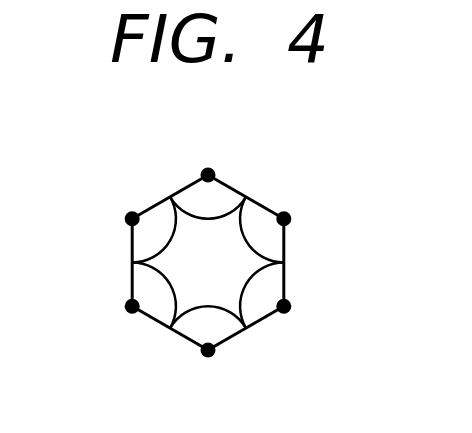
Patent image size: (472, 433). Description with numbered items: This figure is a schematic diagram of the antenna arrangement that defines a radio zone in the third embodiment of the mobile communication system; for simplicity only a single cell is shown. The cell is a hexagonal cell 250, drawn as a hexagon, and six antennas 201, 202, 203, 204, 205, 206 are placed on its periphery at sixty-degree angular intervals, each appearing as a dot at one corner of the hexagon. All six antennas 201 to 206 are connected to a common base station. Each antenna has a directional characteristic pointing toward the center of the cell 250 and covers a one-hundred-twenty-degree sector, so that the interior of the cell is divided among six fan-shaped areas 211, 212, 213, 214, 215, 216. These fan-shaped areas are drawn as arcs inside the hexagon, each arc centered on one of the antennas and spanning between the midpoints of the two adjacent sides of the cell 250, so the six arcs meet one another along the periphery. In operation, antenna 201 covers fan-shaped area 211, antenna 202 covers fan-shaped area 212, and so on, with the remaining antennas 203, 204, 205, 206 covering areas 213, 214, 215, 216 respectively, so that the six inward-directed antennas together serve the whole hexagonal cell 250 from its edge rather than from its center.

The antenna 201 is at (209, 360).
The antenna 202 is at (126, 312).
The antenna 203 is at (125, 218).
The antenna 204 is at (208, 167).
The antenna 205 is at (292, 219).
The antenna 206 is at (290, 312).
The fan-shaped area 211 is at (232, 338).
The fan-shaped area 212 is at (161, 319).
The fan-shaped area 213 is at (130, 250).
The fan-shaped area 214 is at (192, 190).
The fan-shaped area 215 is at (257, 206).
The fan-shaped area 216 is at (285, 284).
The hexagonal cell 250 is at (236, 188).